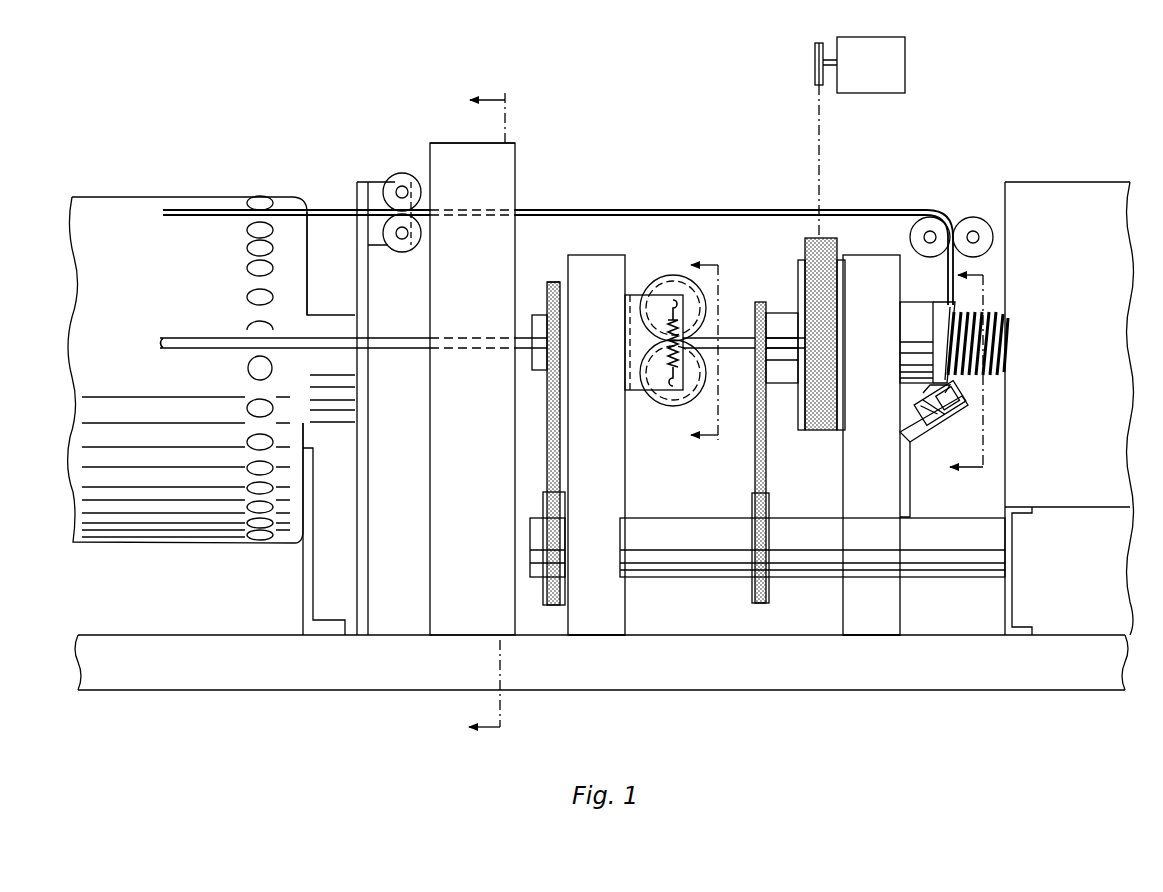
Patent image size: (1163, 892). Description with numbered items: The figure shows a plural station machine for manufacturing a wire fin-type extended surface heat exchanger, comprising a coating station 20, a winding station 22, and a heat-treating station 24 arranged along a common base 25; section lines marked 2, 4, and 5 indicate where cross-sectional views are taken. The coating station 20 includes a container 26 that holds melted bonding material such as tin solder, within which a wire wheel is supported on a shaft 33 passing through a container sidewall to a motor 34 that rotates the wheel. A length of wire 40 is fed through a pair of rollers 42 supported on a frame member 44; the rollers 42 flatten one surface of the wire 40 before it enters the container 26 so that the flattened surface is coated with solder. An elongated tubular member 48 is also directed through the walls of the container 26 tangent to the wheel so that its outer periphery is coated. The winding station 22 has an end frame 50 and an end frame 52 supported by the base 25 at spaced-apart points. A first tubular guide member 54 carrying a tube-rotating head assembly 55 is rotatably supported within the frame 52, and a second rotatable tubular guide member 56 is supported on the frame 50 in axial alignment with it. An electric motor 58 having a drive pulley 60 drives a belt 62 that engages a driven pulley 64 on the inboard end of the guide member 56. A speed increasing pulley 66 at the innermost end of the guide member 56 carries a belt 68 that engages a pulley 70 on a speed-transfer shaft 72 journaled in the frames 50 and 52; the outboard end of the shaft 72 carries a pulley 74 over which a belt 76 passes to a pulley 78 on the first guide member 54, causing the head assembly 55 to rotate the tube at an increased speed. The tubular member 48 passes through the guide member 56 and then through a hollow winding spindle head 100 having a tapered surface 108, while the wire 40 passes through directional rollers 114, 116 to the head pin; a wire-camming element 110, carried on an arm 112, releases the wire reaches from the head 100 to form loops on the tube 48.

The section line 2- 2 is at (502, 419).
The section line 4- 4 is at (715, 356).
The section line 5- 5 is at (978, 374).
The coating station 20 is at (515, 161).
The winding station 22 is at (895, 255).
The heat-treating station 24 is at (1080, 168).
The base 25 is at (690, 645).
The container 26 is at (500, 200).
The shaft 33 is at (395, 343).
The motor 34 is at (290, 258).
The wire 40 is at (330, 209).
The rollers 42 is at (400, 172).
The frame member 44 is at (370, 470).
The tubular member 48 is at (531, 320).
The end frame 50 is at (880, 562).
The end frame 52 is at (612, 446).
The first tubular guide member 54 is at (563, 330).
The tube-rotating head assembly 55 is at (638, 295).
The second rotatable tubular guide member 56 is at (940, 308).
The electric motor 58 is at (890, 80).
The drive pulley 60 is at (815, 63).
The belt 62 is at (825, 238).
The driven pulley 64 is at (798, 430).
The speed increasing pulley 66 is at (768, 300).
The belt 68 is at (757, 462).
The pulley 70 is at (764, 590).
The speed-transfer shaft 72 is at (654, 529).
The pulley 74 is at (545, 502).
The belt 76 is at (556, 468).
The pulley 78 is at (545, 392).
The winding spindle head 100 is at (898, 372).
The tapered surface 108 is at (944, 309).
The wire-camming element 110 is at (957, 388).
The cutter arm 112 is at (916, 438).
The directional roller 114 is at (930, 216).
The directional roller 116 is at (973, 217).